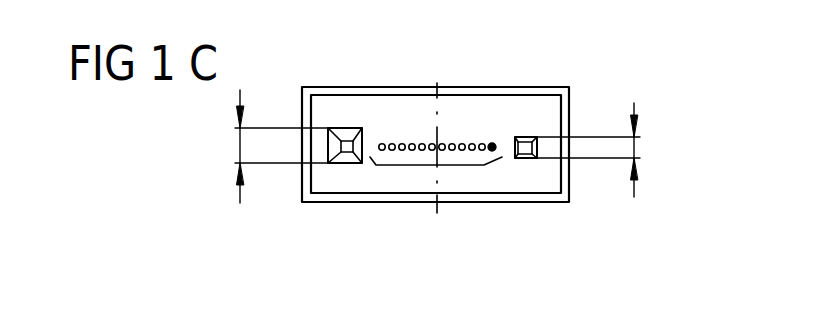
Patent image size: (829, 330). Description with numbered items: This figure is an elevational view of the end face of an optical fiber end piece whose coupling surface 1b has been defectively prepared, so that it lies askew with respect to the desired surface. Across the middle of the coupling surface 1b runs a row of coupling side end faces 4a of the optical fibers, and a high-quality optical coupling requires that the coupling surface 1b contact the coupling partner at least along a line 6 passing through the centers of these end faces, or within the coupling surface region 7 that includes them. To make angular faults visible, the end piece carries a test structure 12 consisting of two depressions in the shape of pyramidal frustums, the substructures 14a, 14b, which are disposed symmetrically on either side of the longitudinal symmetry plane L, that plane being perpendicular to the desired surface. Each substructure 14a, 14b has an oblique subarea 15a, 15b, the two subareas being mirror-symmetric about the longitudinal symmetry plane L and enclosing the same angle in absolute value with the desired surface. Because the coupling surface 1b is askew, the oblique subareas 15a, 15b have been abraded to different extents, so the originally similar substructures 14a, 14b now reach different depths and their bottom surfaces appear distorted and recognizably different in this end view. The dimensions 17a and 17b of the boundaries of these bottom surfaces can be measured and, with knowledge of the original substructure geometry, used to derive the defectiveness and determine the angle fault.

The test structure 12 is at (322, 180).
The first substructure 14a is at (342, 163).
The second substructure 14b is at (528, 158).
The first subarea 15a is at (337, 127).
The second subarea 15b is at (537, 137).
The coupling side end faces 4a is at (402, 145).
The line 6 is at (492, 150).
The coupling surface region 7 is at (432, 165).
The coupling surface 1b is at (462, 183).
The longitudinal symmetry plane L is at (437, 132).
The dimension of first bottom surface 17a is at (240, 142).
The dimension of second bottom surface 17b is at (638, 147).